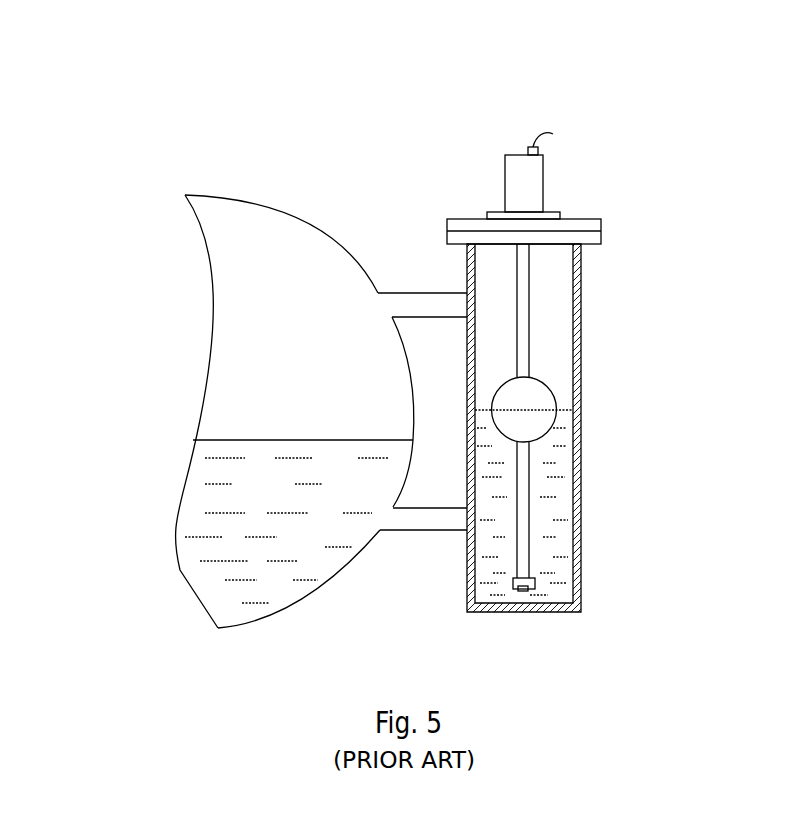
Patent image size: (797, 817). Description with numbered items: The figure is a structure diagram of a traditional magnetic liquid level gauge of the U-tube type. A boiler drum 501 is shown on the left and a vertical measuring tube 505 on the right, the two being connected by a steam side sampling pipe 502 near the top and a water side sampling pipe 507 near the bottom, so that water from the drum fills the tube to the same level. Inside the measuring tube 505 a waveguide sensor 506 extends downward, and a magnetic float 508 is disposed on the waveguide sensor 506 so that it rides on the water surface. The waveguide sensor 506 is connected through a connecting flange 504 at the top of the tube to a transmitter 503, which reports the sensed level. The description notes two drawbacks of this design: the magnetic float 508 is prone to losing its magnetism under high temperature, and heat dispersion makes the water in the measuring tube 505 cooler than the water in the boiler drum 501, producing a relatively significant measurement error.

The boiler drum 501 is at (207, 370).
The steam side sampling pipe 502 is at (386, 210).
The transmitter 503 is at (424, 107).
The connecting flange 504 is at (592, 175).
The measuring tube 505 is at (605, 401).
The waveguide sensor 506 is at (624, 525).
The water side sampling pipe 507 is at (400, 587).
The magnetic float 508 is at (611, 378).